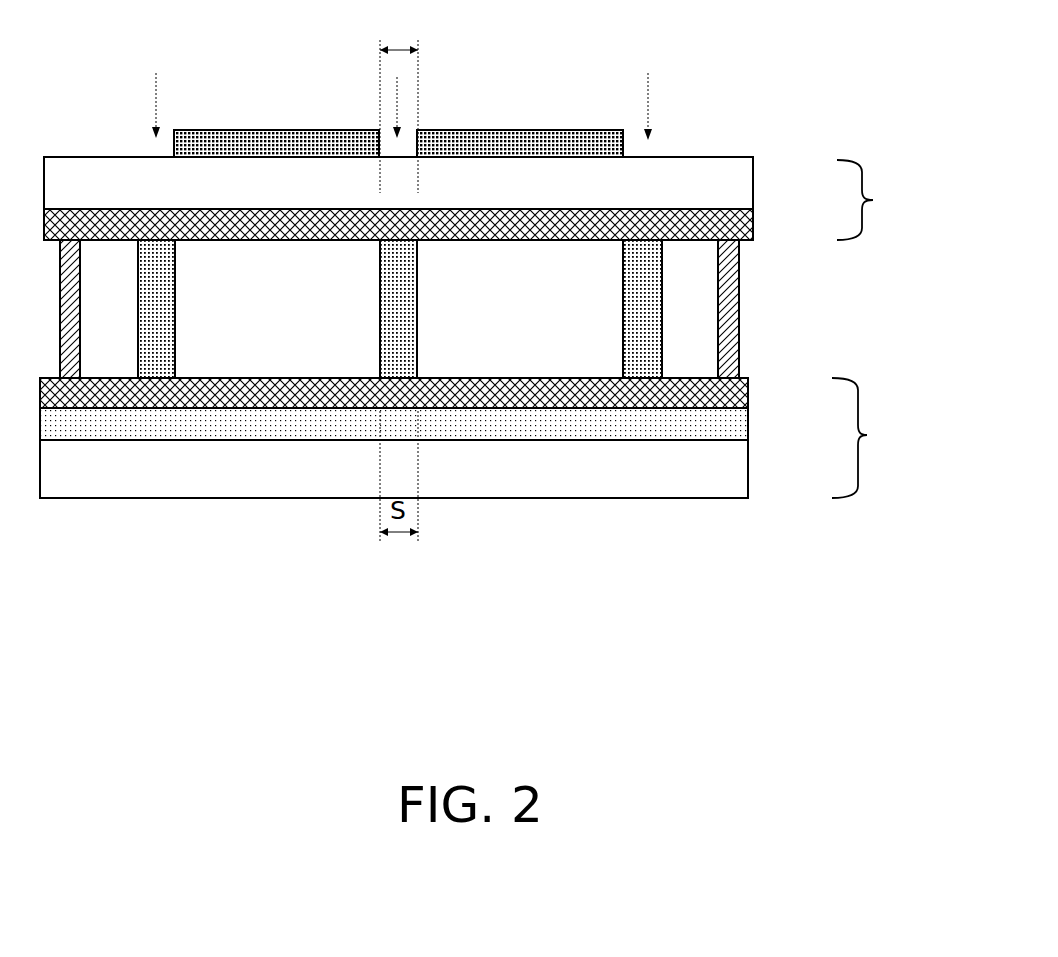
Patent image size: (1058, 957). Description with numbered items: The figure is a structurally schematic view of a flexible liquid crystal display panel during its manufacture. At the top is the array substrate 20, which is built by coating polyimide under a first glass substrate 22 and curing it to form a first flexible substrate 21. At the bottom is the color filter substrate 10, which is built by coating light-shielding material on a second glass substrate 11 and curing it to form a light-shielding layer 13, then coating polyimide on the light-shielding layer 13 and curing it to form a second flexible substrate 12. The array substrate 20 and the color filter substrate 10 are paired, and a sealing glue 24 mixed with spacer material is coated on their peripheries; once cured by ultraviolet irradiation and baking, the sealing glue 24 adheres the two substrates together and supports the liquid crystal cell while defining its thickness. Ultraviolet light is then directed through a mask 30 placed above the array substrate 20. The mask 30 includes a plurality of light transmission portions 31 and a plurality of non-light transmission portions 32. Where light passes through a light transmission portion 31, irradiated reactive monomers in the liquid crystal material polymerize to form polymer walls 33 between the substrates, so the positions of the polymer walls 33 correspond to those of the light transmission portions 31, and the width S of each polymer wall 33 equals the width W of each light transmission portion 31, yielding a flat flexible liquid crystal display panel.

The color filter substrate 10 is at (869, 438).
The second glass substrate 11 is at (748, 475).
The second flexible substrate 12 is at (748, 397).
The light-shielding layer 13 is at (748, 427).
The array substrate 20 is at (873, 200).
The first flexible substrate 21 is at (753, 222).
The first glass substrate 22 is at (753, 177).
The sealing glue 24 is at (740, 307).
The mask 30 is at (523, 133).
The light transmission portion 31 is at (392, 147).
The non-light transmission portion 32 is at (260, 138).
The polymer wall 33 is at (640, 313).